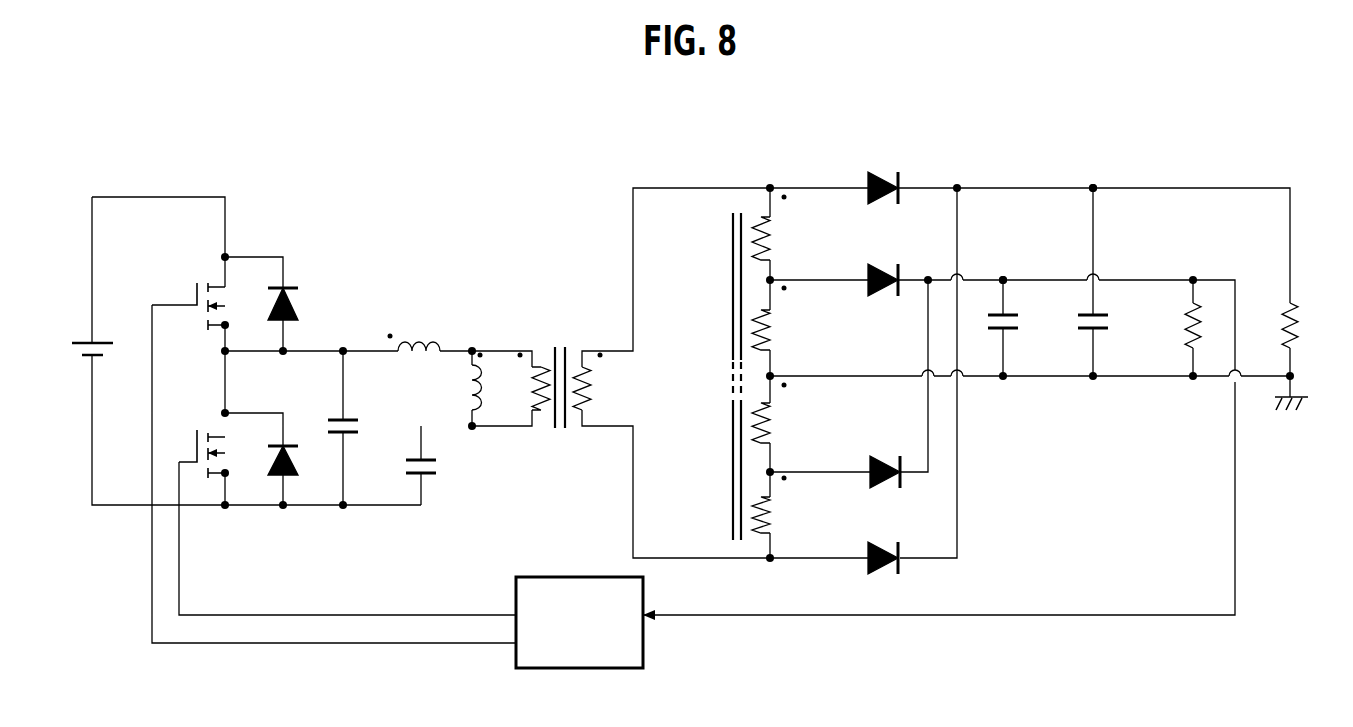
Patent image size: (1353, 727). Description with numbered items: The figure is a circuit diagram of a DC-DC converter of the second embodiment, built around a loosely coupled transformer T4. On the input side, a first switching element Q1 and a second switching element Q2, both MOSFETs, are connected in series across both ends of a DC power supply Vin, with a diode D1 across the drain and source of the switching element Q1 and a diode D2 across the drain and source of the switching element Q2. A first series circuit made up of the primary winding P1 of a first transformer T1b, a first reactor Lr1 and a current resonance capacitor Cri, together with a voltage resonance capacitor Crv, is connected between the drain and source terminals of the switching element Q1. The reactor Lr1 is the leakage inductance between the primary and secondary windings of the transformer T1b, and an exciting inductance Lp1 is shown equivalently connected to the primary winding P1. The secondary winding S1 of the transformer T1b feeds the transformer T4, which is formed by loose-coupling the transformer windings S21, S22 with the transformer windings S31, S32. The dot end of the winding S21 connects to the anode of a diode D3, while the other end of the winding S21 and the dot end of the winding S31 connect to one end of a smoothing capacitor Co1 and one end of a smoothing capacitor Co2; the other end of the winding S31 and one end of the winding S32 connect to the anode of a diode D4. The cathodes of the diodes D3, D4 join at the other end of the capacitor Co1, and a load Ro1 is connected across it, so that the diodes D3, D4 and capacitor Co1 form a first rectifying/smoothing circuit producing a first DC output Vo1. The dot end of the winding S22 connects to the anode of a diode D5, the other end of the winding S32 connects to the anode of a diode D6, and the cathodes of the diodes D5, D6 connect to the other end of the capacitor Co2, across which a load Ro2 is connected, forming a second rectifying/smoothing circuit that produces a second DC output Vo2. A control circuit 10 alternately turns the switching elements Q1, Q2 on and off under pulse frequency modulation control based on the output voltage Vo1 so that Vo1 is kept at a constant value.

The control circuit 10 is at (645, 652).
The DC power supply Vin is at (101, 334).
The first switching element Q1 is at (202, 467).
The second switching element Q2 is at (188, 315).
The diode D1 is at (277, 473).
The diode D2 is at (293, 293).
The voltage resonance capacitor Crv is at (356, 443).
The current resonance capacitor Cri is at (433, 479).
The first reactor Lr1 is at (419, 329).
The exciting inductance Lp1 is at (458, 387).
The primary winding P1 is at (526, 388).
The secondary winding S1 is at (598, 388).
The first transformer T1b is at (557, 372).
The transformer T4 is at (731, 365).
The transformer winding S21 is at (784, 330).
The transformer winding S22 is at (784, 238).
The transformer winding S31 is at (784, 423).
The transformer winding S32 is at (784, 515).
The diode D3 is at (884, 290).
The diode D4 is at (886, 458).
The diode D5 is at (884, 199).
The diode D6 is at (885, 548).
The first DC output Vo1 is at (1003, 280).
The second DC output Vo2 is at (1093, 188).
The smoothing capacitor Co1 is at (1016, 336).
The smoothing capacitor Co2 is at (1106, 336).
The load Ro1 is at (1173, 325).
The load Ro2 is at (1312, 325).